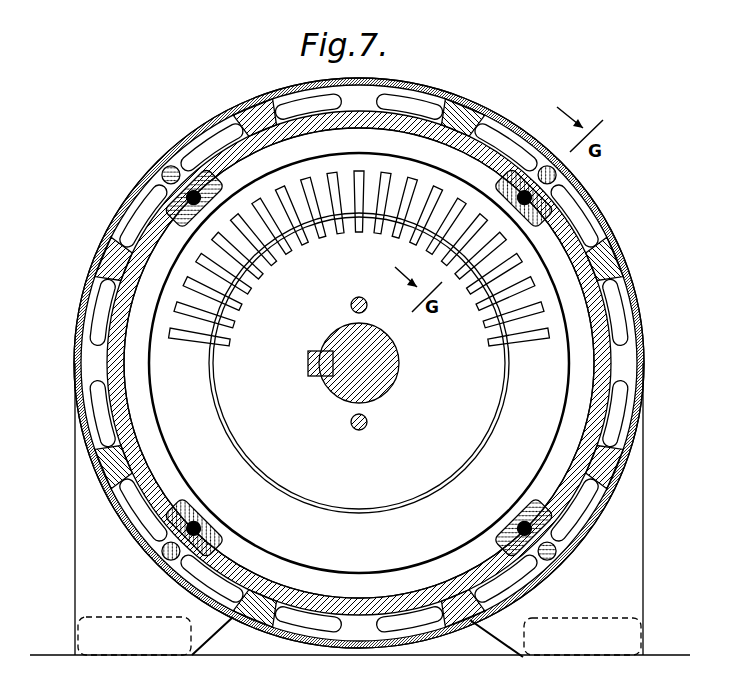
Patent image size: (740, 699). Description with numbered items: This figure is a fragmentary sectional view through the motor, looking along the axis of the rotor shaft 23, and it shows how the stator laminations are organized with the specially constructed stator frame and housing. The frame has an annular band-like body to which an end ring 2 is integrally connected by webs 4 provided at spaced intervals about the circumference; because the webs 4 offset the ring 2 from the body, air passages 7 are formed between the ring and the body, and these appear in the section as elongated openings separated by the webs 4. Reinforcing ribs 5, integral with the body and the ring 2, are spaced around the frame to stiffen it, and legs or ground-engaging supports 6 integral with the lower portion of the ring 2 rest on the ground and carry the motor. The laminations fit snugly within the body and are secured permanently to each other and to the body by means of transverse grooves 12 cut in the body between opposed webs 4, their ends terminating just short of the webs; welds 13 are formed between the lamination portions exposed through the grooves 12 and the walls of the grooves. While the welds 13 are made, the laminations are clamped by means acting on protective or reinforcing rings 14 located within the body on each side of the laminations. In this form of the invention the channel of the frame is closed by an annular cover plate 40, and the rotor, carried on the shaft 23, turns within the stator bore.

The end ring 2 is at (293, 634).
The integral web 4 is at (373, 80).
The reinforcing rib 5 is at (464, 111).
The leg 6 is at (616, 643).
The air passage 7 is at (296, 106).
The transverse groove 12 is at (215, 546).
The weld 13 is at (190, 200).
The reinforcing ring 14 is at (278, 572).
The rotor shaft 23 is at (400, 366).
The annular cover plate 40 is at (191, 130).